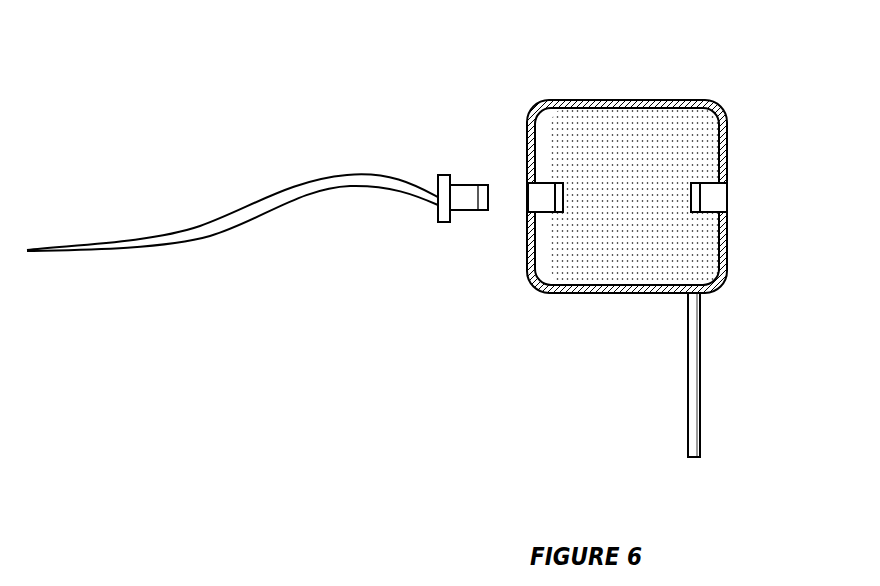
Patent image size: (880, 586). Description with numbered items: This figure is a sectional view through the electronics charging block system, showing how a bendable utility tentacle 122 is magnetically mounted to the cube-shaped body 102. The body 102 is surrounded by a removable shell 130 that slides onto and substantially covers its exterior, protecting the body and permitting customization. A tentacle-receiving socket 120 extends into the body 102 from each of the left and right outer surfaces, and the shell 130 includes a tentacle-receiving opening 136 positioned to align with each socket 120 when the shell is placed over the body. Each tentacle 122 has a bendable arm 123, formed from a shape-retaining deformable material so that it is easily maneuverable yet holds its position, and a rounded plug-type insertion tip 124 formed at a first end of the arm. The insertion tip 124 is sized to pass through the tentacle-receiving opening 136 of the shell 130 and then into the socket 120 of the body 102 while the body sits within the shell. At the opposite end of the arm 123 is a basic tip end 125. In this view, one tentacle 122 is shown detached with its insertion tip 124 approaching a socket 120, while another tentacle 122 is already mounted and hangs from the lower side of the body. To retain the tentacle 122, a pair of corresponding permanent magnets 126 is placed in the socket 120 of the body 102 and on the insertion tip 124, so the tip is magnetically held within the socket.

The body 102 is at (647, 127).
The tentacle-receiving socket 120 is at (542, 200).
The bendable utility tentacle 122 is at (78, 268).
The bendable arm 123 is at (99, 250).
The insertion tip 124 is at (443, 223).
The tip end 125 is at (30, 248).
The permanent magnet 126 is at (556, 190).
The removable shell 130 is at (667, 161).
The tentacle-receiving opening 136 is at (528, 212).